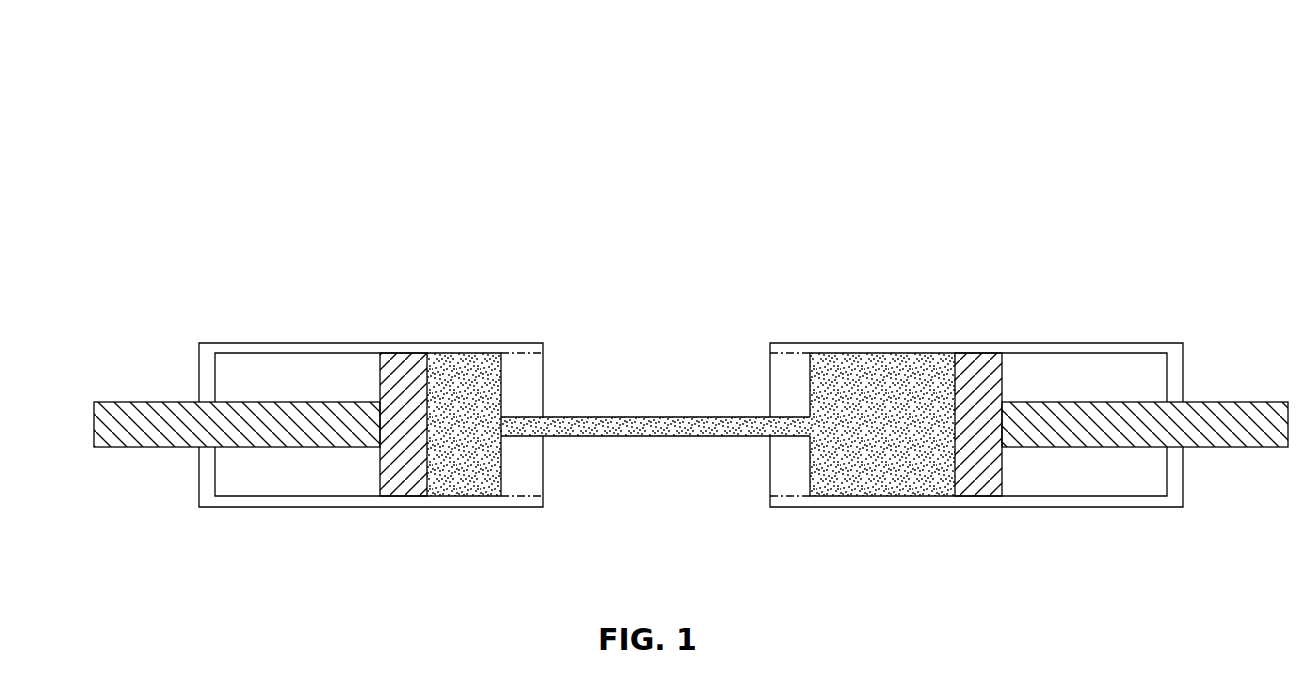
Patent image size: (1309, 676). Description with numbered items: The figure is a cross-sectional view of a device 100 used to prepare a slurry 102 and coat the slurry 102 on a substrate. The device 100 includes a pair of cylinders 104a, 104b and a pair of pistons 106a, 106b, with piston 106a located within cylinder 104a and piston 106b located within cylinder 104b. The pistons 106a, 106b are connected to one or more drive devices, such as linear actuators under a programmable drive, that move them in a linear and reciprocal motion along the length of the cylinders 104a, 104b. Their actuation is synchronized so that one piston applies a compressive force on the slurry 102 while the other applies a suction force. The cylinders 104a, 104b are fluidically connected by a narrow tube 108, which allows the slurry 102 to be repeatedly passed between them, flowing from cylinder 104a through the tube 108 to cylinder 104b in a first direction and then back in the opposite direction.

The device 100 is at (148, 54).
The slurry 102 is at (469, 363).
The cylinder 104a is at (243, 342).
The cylinder 104b is at (1133, 342).
The piston 106a is at (398, 363).
The piston 106b is at (976, 363).
The narrow tube 108 is at (610, 415).